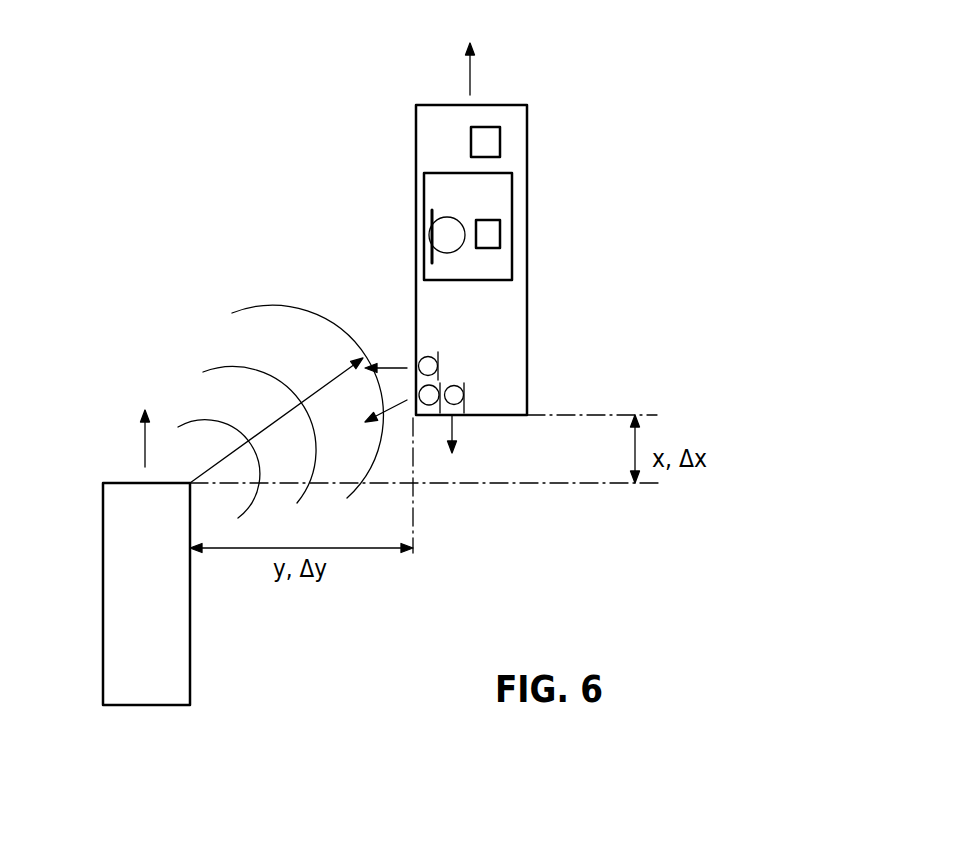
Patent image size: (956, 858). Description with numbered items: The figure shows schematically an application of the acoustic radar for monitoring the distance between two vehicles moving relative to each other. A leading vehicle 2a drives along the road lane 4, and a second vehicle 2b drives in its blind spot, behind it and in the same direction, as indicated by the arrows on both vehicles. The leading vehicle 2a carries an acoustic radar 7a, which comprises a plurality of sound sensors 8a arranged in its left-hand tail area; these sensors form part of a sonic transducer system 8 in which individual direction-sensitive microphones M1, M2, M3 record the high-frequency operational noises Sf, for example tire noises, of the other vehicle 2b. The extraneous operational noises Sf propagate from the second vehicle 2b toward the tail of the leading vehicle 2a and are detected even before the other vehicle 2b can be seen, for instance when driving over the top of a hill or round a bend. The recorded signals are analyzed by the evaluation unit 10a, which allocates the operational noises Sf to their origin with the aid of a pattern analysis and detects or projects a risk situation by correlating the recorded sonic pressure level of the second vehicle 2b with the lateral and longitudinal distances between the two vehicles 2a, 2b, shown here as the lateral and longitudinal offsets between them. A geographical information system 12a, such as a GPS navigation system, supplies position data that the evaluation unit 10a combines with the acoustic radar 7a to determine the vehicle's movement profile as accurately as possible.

The leading vehicle 2a is at (527, 350).
The second vehicle 2b is at (117, 483).
The road lane 4 is at (470, 78).
The acoustic radar 7a is at (512, 198).
The sonic transducer system 8 is at (431, 224).
The sound sensors 8a is at (464, 362).
The evaluation unit 10a is at (500, 232).
The geographical information system 12a is at (500, 138).
The direction-sensitive microphone M1 is at (422, 357).
The direction-sensitive microphone M2 is at (429, 406).
The direction-sensitive microphone M3 is at (466, 402).
The extraneous operational noises Sf is at (315, 390).